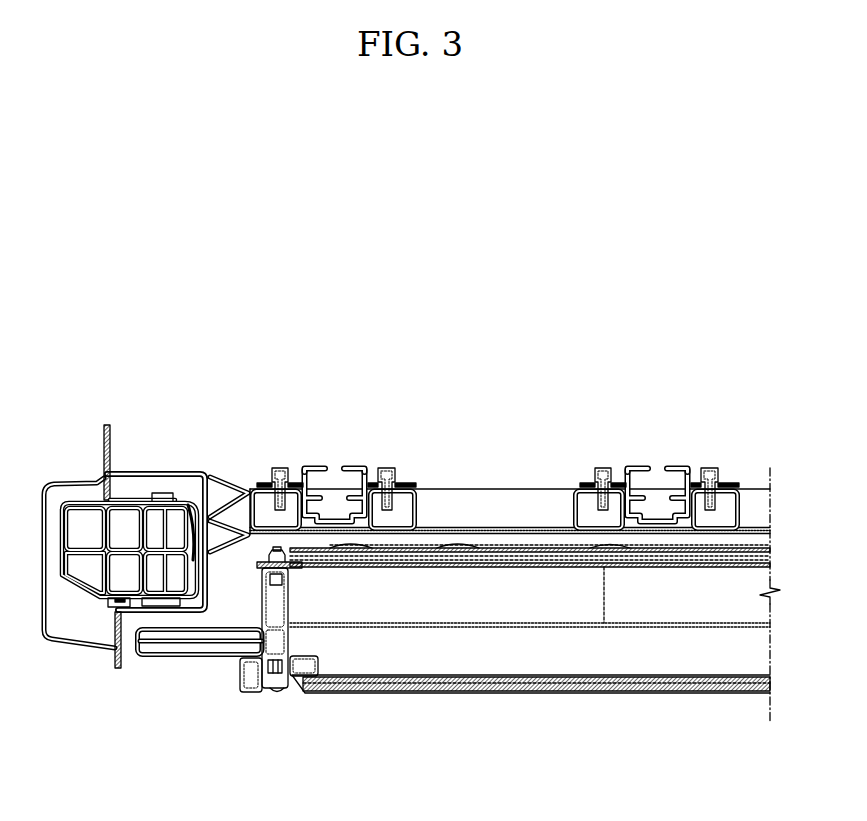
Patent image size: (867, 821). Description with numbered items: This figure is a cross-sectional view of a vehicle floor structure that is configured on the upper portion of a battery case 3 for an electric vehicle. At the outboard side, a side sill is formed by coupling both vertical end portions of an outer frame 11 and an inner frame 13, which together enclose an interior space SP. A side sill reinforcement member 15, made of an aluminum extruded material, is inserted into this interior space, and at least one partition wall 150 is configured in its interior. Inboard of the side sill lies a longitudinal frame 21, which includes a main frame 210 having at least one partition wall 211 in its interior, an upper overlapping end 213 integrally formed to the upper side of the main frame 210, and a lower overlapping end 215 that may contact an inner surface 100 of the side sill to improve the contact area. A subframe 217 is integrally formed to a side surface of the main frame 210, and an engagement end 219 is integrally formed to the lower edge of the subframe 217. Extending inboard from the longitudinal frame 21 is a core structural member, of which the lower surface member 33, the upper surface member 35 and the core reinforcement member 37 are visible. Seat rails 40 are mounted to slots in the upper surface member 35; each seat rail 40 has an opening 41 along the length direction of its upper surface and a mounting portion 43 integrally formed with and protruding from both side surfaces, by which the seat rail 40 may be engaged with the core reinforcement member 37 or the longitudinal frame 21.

The battery case 3 is at (546, 707).
The outer frame 11 is at (97, 642).
The inner frame 13 is at (137, 470).
The side sill reinforcement member 15 is at (85, 607).
The longitudinal frame 21 is at (206, 445).
The lower surface member 33 is at (535, 527).
The upper surface member 35 is at (497, 487).
The core reinforcement member 37 is at (418, 505).
The seat rail 40 is at (354, 467).
The opening 41 is at (345, 470).
The mounting portion 43 is at (413, 488).
The inner surface 100 is at (226, 603).
The partition wall 150 is at (86, 552).
The main frame 210 is at (241, 489).
The partition wall 211 is at (228, 493).
The upper overlapping end 213 is at (178, 470).
The lower overlapping end 215 is at (207, 557).
The subframe 217 is at (283, 535).
The engagement end 219 is at (318, 532).
The interior space SP is at (127, 482).